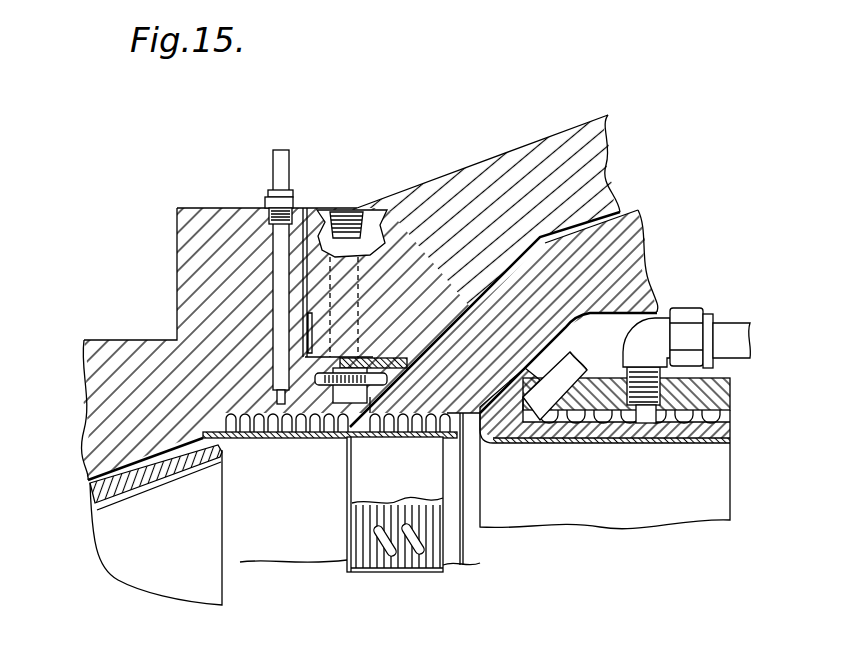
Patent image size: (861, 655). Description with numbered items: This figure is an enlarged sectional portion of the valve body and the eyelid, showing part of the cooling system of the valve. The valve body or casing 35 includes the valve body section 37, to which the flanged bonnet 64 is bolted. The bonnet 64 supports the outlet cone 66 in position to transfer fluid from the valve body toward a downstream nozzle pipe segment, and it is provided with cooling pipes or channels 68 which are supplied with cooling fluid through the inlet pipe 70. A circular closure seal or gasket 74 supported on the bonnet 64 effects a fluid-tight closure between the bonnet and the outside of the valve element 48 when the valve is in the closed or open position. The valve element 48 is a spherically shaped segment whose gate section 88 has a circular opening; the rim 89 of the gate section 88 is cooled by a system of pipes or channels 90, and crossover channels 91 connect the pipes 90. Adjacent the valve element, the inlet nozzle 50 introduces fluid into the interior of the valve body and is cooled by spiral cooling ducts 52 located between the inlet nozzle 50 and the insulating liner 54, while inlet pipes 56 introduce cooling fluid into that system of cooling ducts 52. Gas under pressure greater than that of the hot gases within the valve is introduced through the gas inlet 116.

The valve body 35 is at (618, 124).
The valve body section 37 is at (522, 152).
The valve element 48 is at (650, 221).
The inlet nozzle 50 is at (731, 386).
The spiral cooling ducts 52 is at (677, 418).
The insulating liner 54 is at (615, 447).
The inlet pipes 56 is at (566, 368).
The flanged bonnet 64 is at (188, 247).
The outlet cone 66 is at (105, 492).
The cooling pipes or channels 68 is at (203, 433).
The inlet pipe 70 is at (273, 160).
The circular closure seal or gasket 74 is at (325, 405).
The gate section 88 is at (367, 488).
The rim 89 is at (420, 397).
The pipes or channels 90 is at (431, 570).
The crossover channels 91 is at (422, 568).
The gas inlet 116 is at (345, 250).